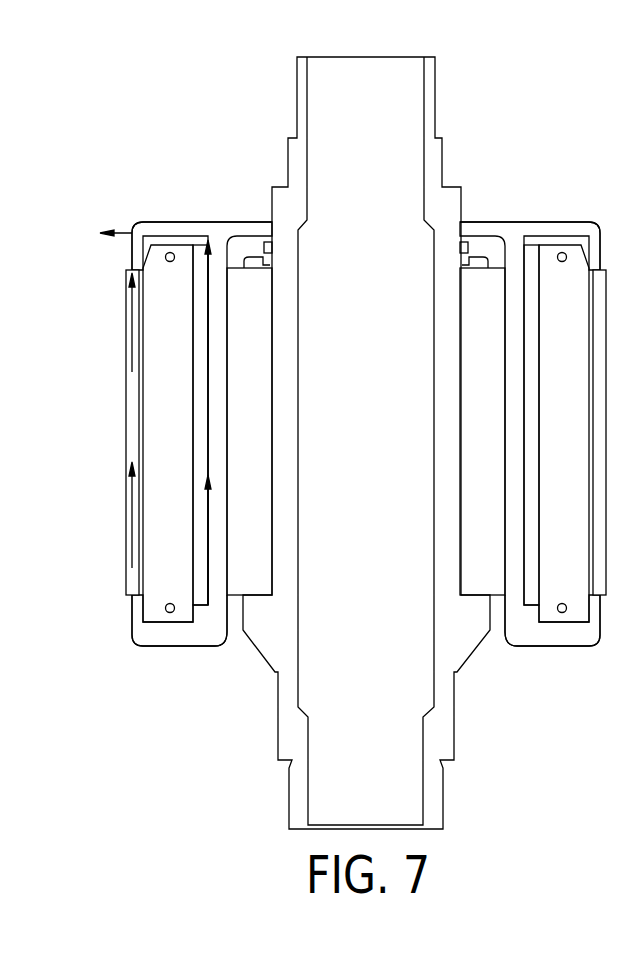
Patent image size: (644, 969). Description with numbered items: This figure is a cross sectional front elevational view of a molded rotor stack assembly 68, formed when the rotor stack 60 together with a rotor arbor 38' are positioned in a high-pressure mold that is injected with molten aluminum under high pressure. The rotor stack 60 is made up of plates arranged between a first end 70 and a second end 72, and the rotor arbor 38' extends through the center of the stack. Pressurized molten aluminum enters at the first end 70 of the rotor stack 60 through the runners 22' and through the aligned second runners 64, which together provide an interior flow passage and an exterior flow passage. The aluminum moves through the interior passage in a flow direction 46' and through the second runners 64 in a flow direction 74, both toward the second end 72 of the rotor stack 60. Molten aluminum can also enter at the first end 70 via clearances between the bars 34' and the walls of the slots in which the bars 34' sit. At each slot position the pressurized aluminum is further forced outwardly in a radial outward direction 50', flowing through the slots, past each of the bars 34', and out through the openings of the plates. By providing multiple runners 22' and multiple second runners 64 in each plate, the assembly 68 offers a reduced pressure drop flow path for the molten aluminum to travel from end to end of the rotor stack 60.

The runners 22' is at (180, 431).
The bars 34' is at (141, 433).
The rotor arbor 38' is at (384, 443).
The flow direction 46' is at (149, 425).
The radial outward direction 50' is at (187, 414).
The rotor stack 60 is at (515, 204).
The second runners 64 is at (132, 322).
The molded rotor stack assembly 68 is at (524, 130).
The first end 70 is at (175, 660).
The second end 72 is at (182, 209).
The flow direction 74 is at (132, 517).